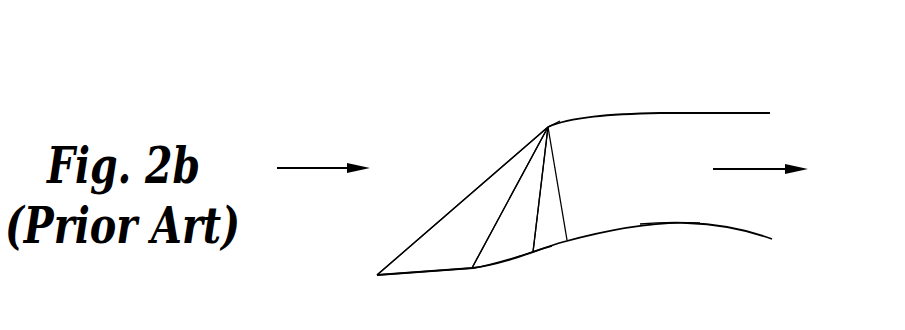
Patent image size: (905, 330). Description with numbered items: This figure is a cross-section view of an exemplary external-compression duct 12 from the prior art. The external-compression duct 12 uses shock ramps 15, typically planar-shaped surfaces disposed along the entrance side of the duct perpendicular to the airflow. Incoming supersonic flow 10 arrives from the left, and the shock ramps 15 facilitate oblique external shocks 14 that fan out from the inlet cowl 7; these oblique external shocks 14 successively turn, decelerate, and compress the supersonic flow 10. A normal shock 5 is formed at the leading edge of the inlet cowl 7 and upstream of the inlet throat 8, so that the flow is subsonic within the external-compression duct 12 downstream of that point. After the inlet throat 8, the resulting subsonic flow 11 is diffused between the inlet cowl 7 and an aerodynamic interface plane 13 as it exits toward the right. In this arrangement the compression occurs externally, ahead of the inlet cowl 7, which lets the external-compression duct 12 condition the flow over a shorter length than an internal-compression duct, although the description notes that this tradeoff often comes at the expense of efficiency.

The normal shock 5 is at (558, 187).
The inlet cowl 7 is at (548, 125).
The inlet throat 8 is at (667, 226).
The supersonic flow 10 is at (323, 180).
The subsonic flow 11 is at (760, 181).
The external-compression duct 12 is at (695, 97).
The aerodynamic interface plane 13 is at (745, 232).
The oblique external shocks 14 is at (538, 198).
The shock ramps 15 is at (430, 272).